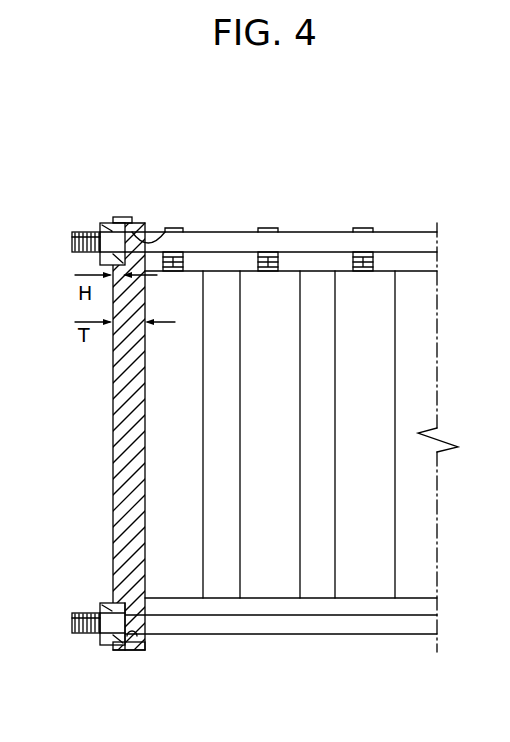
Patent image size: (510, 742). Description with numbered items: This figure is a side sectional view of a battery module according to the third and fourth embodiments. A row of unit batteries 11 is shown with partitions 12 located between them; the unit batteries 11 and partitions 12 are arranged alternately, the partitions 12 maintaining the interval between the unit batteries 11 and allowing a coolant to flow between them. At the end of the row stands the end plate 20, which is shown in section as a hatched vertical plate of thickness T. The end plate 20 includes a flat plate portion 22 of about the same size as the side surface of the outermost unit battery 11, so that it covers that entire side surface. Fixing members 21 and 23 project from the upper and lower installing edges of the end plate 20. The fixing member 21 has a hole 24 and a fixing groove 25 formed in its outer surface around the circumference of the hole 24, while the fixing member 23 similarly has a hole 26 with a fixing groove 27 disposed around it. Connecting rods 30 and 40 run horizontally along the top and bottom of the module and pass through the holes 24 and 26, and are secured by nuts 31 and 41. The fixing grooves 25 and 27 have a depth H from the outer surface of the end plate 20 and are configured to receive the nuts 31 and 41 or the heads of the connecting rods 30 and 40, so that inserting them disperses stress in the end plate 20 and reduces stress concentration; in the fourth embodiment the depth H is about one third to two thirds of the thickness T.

The unit battery 11 is at (269, 592).
The partition 12 is at (317, 583).
The end plate 20 is at (100, 430).
The fixing member 21 is at (130, 218).
The flat plate portion 22 is at (123, 423).
The fixing member 23 is at (146, 638).
The hole 24 is at (160, 236).
The fixing groove 25 is at (105, 224).
The hole 26 is at (135, 646).
The fixing groove 27 is at (105, 605).
The connecting rod 30 is at (250, 240).
The nut 31 is at (101, 227).
The connecting rod 40 is at (383, 630).
The nut 41 is at (104, 641).